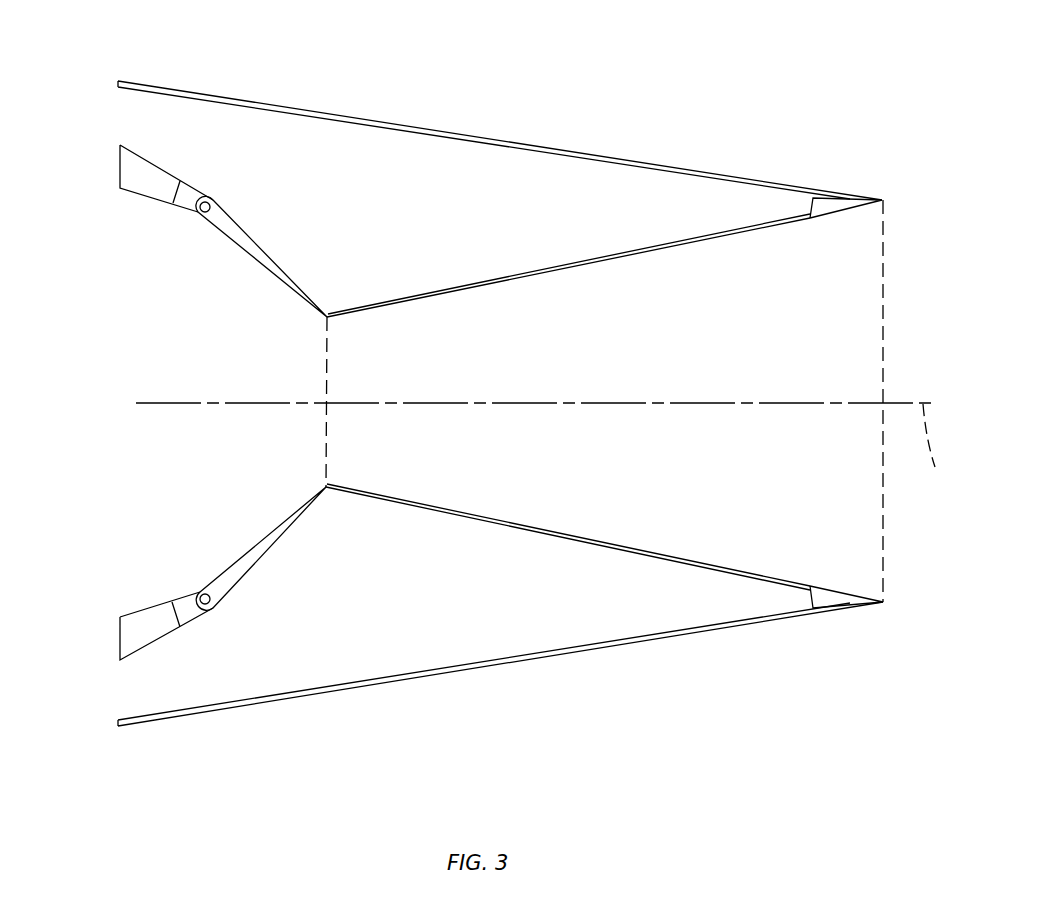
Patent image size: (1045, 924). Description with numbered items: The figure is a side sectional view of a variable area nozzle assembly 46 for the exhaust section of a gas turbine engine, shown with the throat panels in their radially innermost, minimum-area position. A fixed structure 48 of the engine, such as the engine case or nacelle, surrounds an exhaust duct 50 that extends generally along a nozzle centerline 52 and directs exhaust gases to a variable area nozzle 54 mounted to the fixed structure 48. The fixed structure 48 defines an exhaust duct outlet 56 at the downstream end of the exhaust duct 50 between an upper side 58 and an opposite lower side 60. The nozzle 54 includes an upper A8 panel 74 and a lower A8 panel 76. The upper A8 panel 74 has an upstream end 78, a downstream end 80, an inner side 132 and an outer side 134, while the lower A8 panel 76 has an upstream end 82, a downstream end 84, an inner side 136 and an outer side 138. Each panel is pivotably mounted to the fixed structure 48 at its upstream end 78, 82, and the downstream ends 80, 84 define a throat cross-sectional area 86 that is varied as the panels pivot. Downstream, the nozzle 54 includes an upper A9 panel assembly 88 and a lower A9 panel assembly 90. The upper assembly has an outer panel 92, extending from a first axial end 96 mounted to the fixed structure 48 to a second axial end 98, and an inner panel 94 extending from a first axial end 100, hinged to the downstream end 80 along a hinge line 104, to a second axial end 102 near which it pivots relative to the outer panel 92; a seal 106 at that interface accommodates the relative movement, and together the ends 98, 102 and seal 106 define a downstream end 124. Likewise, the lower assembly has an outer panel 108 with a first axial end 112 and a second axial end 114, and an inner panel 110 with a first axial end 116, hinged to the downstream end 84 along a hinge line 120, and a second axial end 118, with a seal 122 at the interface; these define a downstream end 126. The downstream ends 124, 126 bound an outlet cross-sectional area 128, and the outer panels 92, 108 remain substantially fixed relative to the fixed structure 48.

The variable area nozzle assembly 46 is at (849, 99).
The fixed structure 48 is at (146, 77).
The exhaust duct 50 is at (161, 448).
The nozzle centerline 52 is at (936, 449).
The variable area nozzle 54 is at (746, 107).
The exhaust duct outlet 56 is at (114, 316).
The upper side 58 is at (274, 104).
The lower side 60 is at (273, 697).
The upper A8 panel 74 is at (269, 294).
The lower A8 panel 76 is at (269, 511).
The upstream end 78 is at (199, 223).
The downstream end 80 is at (327, 309).
The upstream end 82 is at (196, 589).
The downstream end 84 is at (327, 503).
The throat cross-sectional area 86 is at (330, 418).
The upper A9 panel assembly 88 is at (580, 112).
The lower A9 panel assembly 90 is at (746, 699).
The outer panel 92 is at (506, 140).
The inner panel 94 is at (604, 262).
The first axial end 96 is at (418, 114).
The second axial end 98 is at (876, 191).
The first axial end 100 is at (338, 312).
The second axial end 102 is at (869, 223).
The hinge line 104 is at (334, 325).
The seal 106 is at (845, 197).
The outer panel 108 is at (510, 660).
The inner panel 110 is at (604, 543).
The first axial end 112 is at (384, 698).
The second axial end 114 is at (874, 613).
The first axial end 116 is at (334, 496).
The second axial end 118 is at (860, 588).
The hinge line 120 is at (331, 477).
The seal 122 is at (845, 610).
The downstream end 124 is at (895, 200).
The downstream end 126 is at (895, 605).
The outlet cross-sectional area 128 is at (880, 378).
The inner side 132 is at (236, 242).
The outer side 134 is at (241, 228).
The inner side 136 is at (240, 557).
The outer side 138 is at (245, 575).